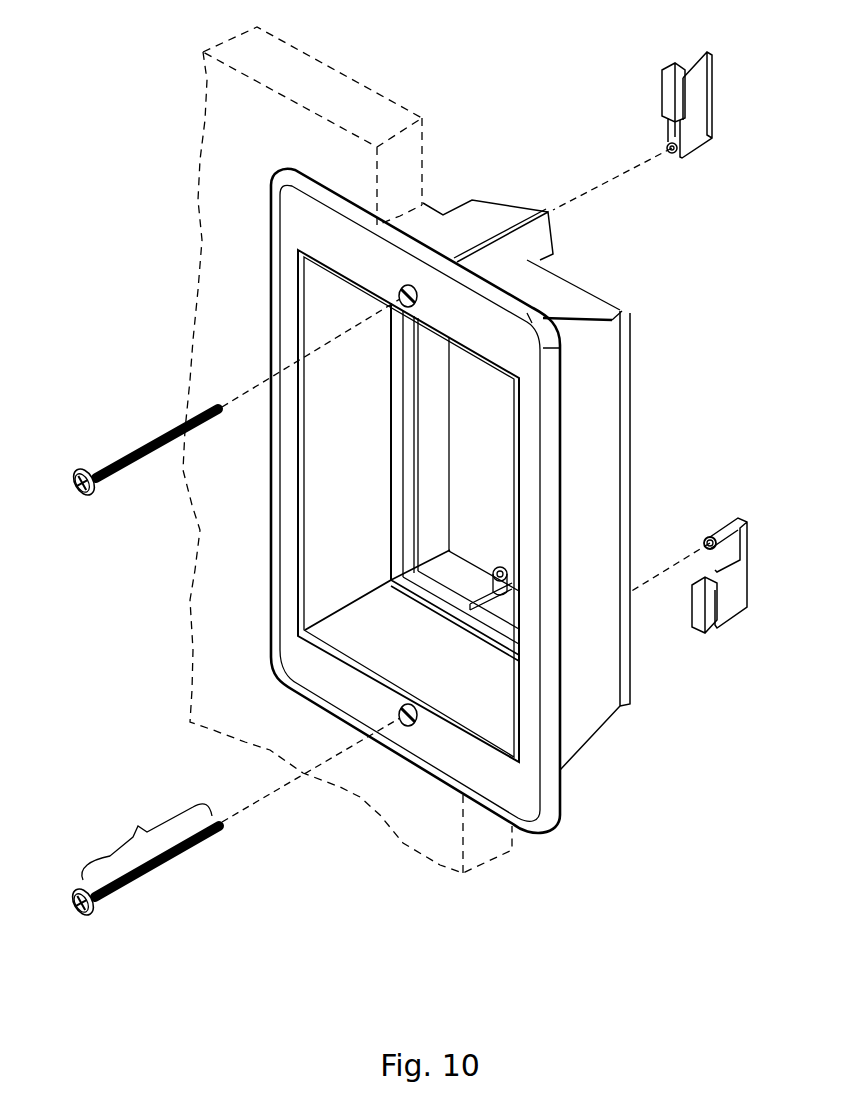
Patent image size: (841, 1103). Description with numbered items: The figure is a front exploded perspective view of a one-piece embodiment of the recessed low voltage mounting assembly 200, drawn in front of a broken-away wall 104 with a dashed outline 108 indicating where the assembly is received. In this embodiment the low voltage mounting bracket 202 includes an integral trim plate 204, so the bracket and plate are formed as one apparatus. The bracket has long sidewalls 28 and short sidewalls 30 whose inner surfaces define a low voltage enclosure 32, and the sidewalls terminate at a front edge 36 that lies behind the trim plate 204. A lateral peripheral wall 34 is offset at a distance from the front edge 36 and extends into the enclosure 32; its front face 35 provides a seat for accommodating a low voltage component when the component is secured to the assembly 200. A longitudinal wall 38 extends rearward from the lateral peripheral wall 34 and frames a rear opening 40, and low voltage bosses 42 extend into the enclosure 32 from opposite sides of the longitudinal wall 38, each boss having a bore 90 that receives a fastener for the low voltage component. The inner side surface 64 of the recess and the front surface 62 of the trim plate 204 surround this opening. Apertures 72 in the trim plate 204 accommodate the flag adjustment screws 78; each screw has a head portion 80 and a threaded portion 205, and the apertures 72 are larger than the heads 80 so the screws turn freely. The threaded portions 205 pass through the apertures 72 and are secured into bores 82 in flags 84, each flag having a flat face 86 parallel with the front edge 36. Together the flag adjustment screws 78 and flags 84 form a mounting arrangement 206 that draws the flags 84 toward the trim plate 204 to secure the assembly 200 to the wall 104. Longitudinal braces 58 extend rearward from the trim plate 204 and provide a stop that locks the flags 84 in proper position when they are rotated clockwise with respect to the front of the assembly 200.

The recessed low voltage mounting assembly 200 is at (155, 205).
The wall 104 is at (328, 157).
The wall opening 108 is at (341, 119).
The short sidewalls 30 is at (440, 252).
The longitudinal braces 58 is at (530, 246).
The low voltage mounting bracket 202 is at (548, 485).
The trim plate 204 is at (530, 690).
The low voltage enclosure 32 is at (478, 501).
The front edge 36 is at (300, 448).
The front face 62 is at (488, 343).
The side wall inner surface 64 is at (360, 451).
The longitudinal wall 38 is at (620, 413).
The rear opening 40 is at (500, 447).
The low voltage bosses 42 is at (512, 557).
The long sidewalls 28 is at (600, 506).
The front face 35 is at (410, 520).
The bores 90 is at (490, 600).
The lateral peripheral wall 34 is at (478, 606).
The apertures 72 is at (398, 293).
The flag adjustment screws 78 is at (211, 620).
The head portion 80 is at (90, 495).
The threaded portion 205 is at (147, 836).
The bores 82 is at (670, 155).
The flags 84 is at (712, 99).
The flat face 86 is at (670, 100).
The mounting arrangement 206 is at (692, 327).